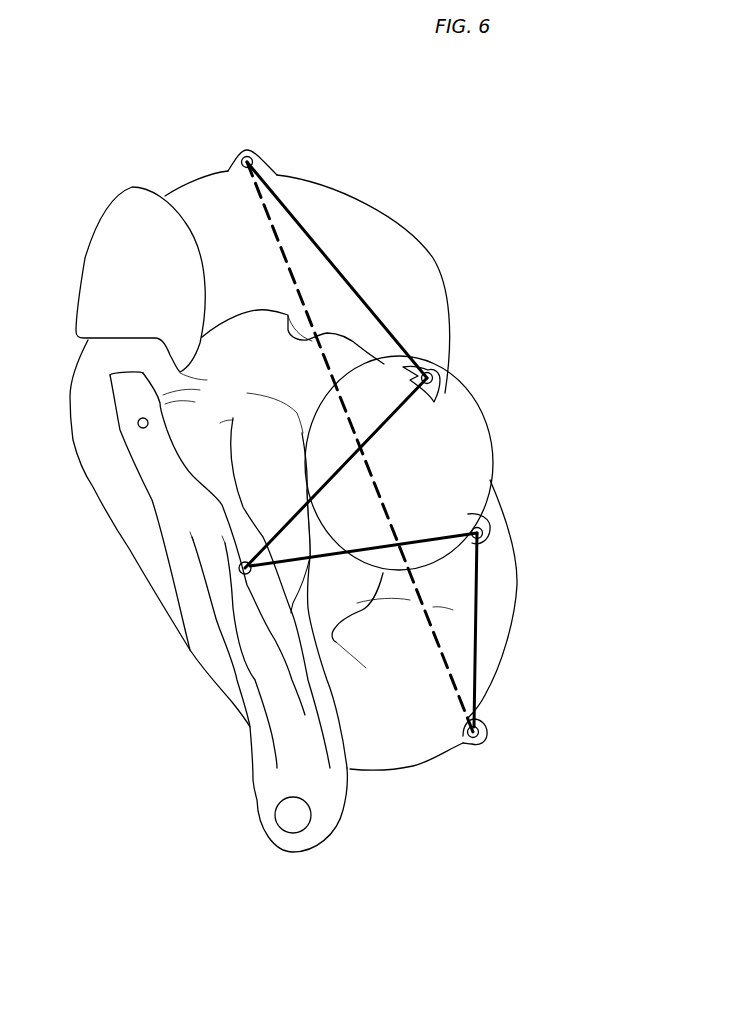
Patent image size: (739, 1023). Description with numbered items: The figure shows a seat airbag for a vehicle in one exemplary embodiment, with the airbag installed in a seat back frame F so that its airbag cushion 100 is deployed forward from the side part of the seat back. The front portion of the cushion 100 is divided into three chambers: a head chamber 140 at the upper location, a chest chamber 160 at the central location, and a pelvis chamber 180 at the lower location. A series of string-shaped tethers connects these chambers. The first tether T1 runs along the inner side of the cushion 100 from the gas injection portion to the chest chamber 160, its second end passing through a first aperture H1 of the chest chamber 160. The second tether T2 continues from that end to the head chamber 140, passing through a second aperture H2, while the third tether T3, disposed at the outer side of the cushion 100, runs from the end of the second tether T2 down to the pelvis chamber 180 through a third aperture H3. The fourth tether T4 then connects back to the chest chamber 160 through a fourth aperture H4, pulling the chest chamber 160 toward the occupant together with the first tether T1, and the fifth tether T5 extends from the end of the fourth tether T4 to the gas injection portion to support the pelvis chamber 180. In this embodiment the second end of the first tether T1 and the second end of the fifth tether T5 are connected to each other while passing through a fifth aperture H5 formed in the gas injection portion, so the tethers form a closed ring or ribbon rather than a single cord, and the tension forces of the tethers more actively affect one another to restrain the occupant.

The airbag cushion 100 is at (397, 754).
The head chamber 140 is at (360, 220).
The chest chamber 160 is at (460, 430).
The pelvis chamber 180 is at (492, 637).
The seat back frame F is at (267, 765).
The first aperture H1 is at (433, 371).
The second aperture H2 is at (248, 156).
The third aperture H3 is at (483, 740).
The fourth aperture H4 is at (490, 525).
The fifth aperture H5 is at (240, 572).
The first tether T1 is at (293, 514).
The second tether T2 is at (364, 297).
The third tether T3 is at (383, 500).
The fourth tether T4 is at (478, 600).
The fifth tether T5 is at (310, 560).